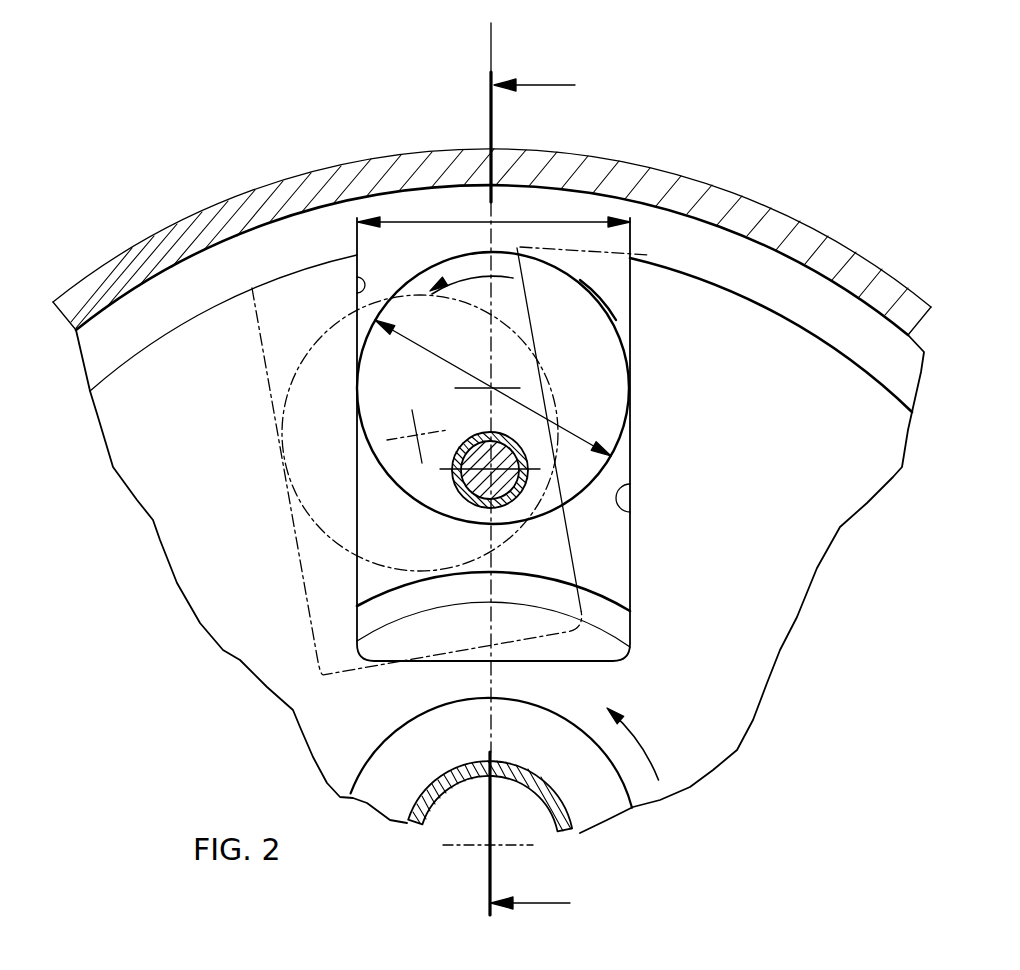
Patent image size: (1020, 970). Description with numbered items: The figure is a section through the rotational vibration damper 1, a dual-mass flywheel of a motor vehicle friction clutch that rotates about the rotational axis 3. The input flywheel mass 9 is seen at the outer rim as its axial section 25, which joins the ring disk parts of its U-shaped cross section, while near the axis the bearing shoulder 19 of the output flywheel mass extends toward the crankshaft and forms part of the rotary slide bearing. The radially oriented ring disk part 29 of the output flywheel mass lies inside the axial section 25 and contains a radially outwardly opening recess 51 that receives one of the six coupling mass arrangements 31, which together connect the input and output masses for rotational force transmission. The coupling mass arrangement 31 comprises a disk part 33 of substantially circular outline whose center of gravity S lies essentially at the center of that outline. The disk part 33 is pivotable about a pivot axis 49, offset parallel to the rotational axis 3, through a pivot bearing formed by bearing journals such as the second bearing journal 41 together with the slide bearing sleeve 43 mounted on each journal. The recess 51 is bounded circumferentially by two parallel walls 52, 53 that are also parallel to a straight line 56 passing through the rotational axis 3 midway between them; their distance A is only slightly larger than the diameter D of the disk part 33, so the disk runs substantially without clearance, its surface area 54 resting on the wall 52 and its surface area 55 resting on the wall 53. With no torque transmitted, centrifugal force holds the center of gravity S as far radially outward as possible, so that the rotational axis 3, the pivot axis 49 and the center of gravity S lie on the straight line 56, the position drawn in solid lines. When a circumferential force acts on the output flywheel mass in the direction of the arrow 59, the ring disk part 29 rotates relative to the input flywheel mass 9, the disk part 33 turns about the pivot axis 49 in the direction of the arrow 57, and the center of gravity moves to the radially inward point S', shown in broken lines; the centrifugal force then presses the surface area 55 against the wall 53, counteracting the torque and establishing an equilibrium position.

The rotational vibration damper 1 is at (754, 150).
The rotational axis 3 is at (488, 848).
The input flywheel mass 9 is at (262, 176).
The bearing shoulder 19 is at (588, 822).
The axial section 25 is at (172, 226).
The ring disk part 29 is at (246, 664).
The coupling mass arrangement 31 is at (648, 410).
The disk part 33 is at (596, 349).
The second bearing journal 41 is at (513, 522).
The slide bearing sleeve 43 is at (508, 437).
The pivot axis 49 is at (452, 517).
The recess 51 is at (413, 657).
The wall 52 is at (356, 288).
The wall 53 is at (632, 506).
The surface area 54 is at (392, 297).
The surface area 55 is at (600, 306).
The straight line 56 is at (491, 63).
The arrow 57 is at (515, 285).
The arrow 59 is at (652, 760).
The distance A is at (450, 222).
The diameter D is at (455, 368).
The center of gravity S is at (513, 372).
The displaced center of gravity S' is at (380, 436).